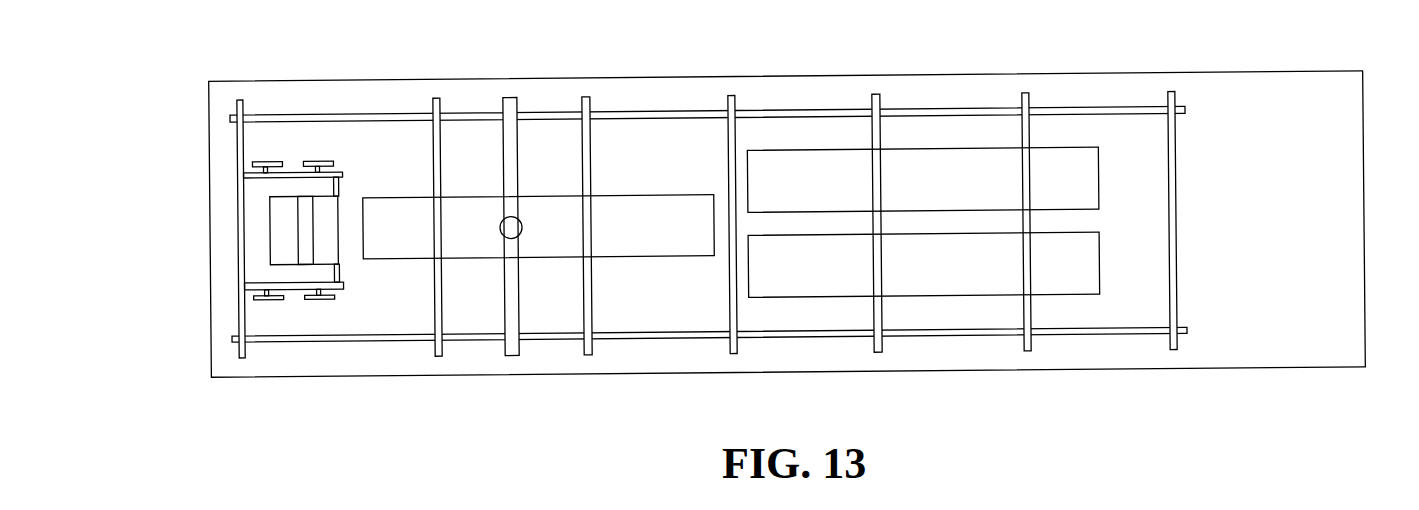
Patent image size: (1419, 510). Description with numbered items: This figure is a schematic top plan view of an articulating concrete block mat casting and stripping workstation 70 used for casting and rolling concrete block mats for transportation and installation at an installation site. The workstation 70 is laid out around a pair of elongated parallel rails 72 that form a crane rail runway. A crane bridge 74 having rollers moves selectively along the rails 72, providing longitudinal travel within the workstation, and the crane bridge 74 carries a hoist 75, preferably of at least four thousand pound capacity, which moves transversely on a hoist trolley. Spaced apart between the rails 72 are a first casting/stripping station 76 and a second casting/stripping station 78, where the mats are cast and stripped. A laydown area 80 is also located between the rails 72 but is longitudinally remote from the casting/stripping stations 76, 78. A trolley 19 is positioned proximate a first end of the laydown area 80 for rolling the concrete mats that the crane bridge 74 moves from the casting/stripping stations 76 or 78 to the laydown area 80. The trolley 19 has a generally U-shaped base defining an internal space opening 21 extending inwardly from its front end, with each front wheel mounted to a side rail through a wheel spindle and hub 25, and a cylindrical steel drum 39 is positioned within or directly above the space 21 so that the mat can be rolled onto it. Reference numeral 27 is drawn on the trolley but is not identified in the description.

The trolley 19 is at (257, 231).
The internal space opening 21 is at (328, 211).
The wheel spindle and hub 25 is at (332, 162).
The foot 27 is at (280, 162).
The drum 39 is at (300, 236).
The articulating concrete block mat casting and stripping workstation 70 is at (552, 379).
The rails 72 is at (1097, 115).
The crane bridge 74 is at (514, 161).
The hoist 75 is at (501, 226).
The first casting/stripping station 76 is at (1092, 273).
The second casting/stripping station 78 is at (1090, 193).
The laydown area 80 is at (685, 211).